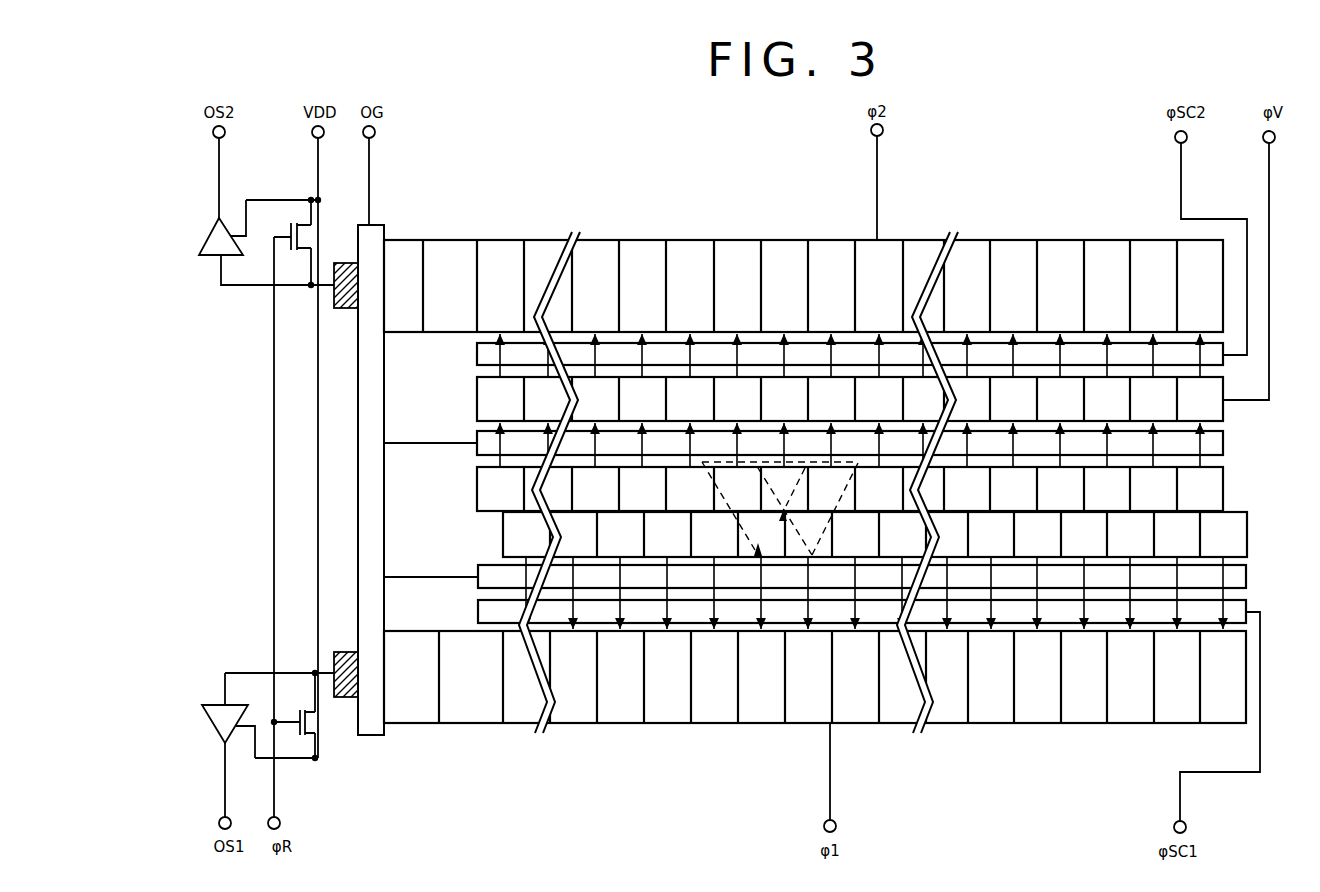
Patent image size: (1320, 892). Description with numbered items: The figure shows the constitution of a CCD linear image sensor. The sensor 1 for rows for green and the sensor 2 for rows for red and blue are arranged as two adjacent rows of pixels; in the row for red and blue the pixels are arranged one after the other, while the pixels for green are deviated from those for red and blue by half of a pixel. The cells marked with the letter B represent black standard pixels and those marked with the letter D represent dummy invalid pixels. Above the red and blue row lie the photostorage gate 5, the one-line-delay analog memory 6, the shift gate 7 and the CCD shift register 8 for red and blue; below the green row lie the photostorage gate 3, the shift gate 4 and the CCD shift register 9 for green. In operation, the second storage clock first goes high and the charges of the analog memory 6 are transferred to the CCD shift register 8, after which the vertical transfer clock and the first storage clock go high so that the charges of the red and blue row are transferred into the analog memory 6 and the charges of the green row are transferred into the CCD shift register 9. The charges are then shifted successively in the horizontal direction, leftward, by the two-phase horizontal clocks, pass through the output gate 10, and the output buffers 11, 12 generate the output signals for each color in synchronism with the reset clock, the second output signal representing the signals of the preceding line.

The sensor for rows for green 1 is at (1247, 538).
The sensor for rows for red and blue 2 is at (1223, 492).
The photostorage gate 3 is at (1246, 578).
The shift gate 4 is at (1246, 618).
The photostorage gate 5 is at (1223, 445).
The one-line-delay analog memory 6 is at (477, 395).
The shift gate 7 is at (477, 352).
The CCD shift register for red and blue 8 is at (408, 240).
The CCD shift register for green 9 is at (469, 724).
The output gate 10 is at (380, 736).
The output buffer 11 is at (199, 237).
The output buffer 12 is at (203, 738).